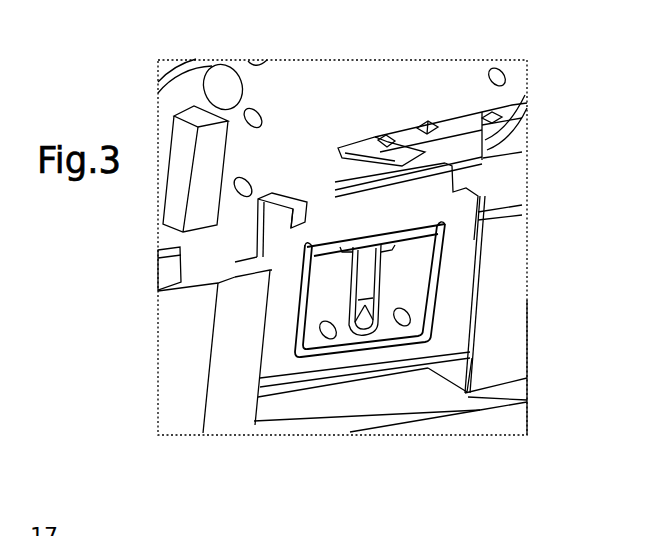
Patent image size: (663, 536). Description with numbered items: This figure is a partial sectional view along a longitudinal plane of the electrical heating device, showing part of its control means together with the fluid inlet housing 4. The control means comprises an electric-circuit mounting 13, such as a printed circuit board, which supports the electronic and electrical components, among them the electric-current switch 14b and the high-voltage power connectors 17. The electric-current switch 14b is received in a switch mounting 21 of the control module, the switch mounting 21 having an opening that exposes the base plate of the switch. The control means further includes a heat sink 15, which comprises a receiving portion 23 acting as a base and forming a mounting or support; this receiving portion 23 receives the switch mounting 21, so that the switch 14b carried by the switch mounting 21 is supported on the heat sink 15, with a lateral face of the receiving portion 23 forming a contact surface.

The electric-circuit mounting 13 is at (375, 75).
The high-voltage power connectors 17 is at (452, 150).
The electric-current switch 14b is at (368, 273).
The heat sink 15 is at (238, 385).
The receiving portion 23 is at (350, 377).
The switch mounting 21 is at (447, 328).
The fluid inlet housing 4 is at (510, 380).